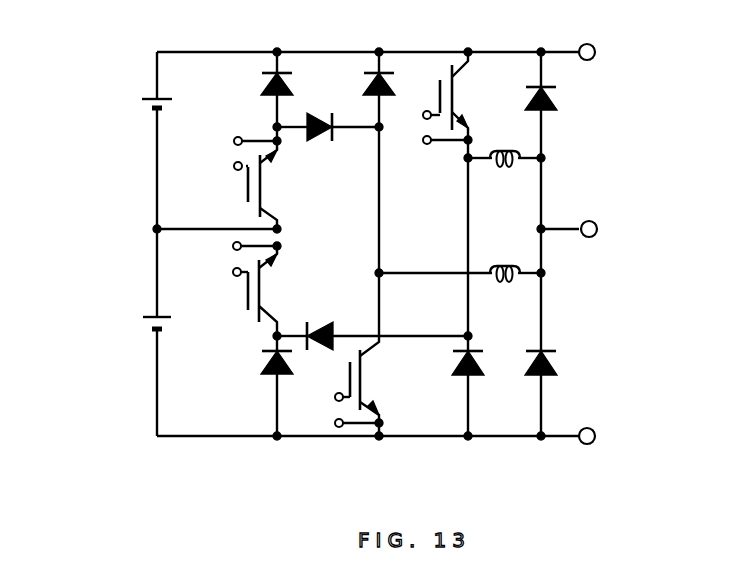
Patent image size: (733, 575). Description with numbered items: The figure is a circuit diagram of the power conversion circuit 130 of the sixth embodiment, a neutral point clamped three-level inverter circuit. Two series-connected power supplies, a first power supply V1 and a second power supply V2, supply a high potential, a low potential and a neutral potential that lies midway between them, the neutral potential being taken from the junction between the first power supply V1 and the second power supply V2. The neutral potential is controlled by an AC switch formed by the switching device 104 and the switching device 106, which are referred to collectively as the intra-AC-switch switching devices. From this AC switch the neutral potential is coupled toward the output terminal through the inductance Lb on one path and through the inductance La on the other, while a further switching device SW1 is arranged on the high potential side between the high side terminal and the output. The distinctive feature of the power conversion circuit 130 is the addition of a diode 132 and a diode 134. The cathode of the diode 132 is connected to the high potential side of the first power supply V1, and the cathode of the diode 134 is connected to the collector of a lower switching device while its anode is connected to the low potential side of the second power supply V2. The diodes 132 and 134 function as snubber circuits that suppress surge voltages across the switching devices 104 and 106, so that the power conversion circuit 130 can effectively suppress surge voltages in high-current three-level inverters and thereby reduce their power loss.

The power conversion circuit 130 is at (73, 50).
The diode 132 is at (256, 83).
The diode 134 is at (258, 366).
The switching device 104 is at (276, 192).
The switching device 106 is at (283, 289).
The switching device SW1 is at (467, 99).
The inductance La is at (506, 173).
The inductance Lb is at (506, 288).
The first power supply V1 is at (139, 105).
The second power supply V2 is at (139, 326).